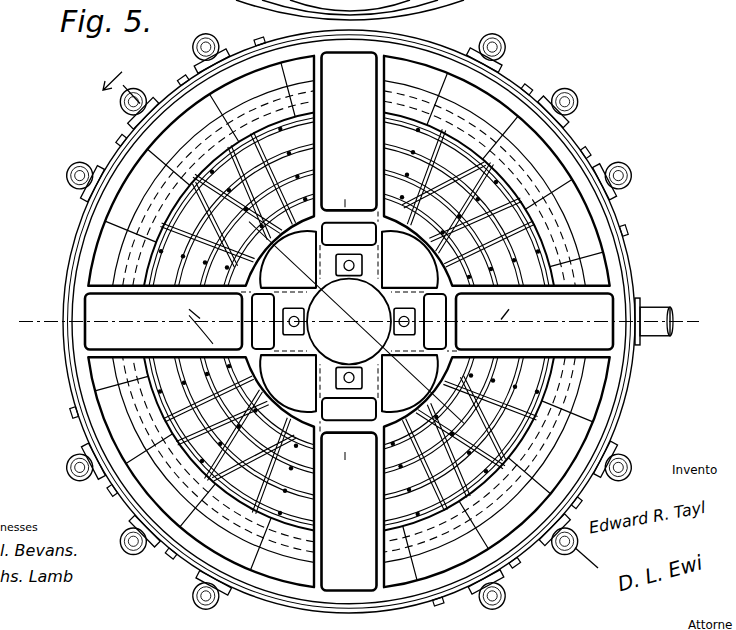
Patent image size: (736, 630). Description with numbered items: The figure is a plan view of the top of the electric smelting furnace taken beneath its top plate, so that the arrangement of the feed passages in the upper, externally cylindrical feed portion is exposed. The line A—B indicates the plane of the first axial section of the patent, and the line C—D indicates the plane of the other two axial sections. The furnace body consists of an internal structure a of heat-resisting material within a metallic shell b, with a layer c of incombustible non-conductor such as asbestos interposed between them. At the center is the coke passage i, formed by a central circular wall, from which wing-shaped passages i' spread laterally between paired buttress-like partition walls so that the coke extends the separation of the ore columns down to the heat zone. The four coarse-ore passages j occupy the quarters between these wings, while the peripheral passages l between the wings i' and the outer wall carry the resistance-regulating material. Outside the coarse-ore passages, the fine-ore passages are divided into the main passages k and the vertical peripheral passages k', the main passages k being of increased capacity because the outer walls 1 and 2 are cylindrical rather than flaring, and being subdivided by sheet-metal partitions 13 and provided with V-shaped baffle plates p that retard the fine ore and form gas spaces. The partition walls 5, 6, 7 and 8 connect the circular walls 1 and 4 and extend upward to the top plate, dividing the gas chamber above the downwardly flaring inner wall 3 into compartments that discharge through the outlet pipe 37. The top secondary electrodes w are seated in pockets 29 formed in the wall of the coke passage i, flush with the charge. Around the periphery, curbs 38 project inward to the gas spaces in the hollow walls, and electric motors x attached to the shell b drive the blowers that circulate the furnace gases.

The outer wall 1 is at (348, 304).
The outer wall 2 is at (349, 296).
The inner wall 3 is at (207, 334).
The circular wall 4 is at (356, 323).
The partition wall 5 is at (197, 311).
The partition wall 6 is at (502, 312).
The partition wall 7 is at (346, 193).
The partition wall 8 is at (346, 465).
The partitions 13 is at (348, 300).
The pockets 29 is at (351, 324).
The outlet pipe 37 is at (654, 315).
The curbs 38 is at (373, 324).
The section line end A is at (355, 324).
The section line end B is at (701, 329).
The section line end C is at (109, 86).
The section line end D is at (586, 566).
The internal structure a is at (335, 321).
The metallic shell b is at (333, 322).
The layer of non-conductor c is at (322, 321).
The coke passage i is at (349, 322).
The wing-shaped passage i' is at (349, 321).
The coarse-ore passage j is at (349, 321).
The main fine-ore passage k is at (332, 321).
The peripheral fine-ore passage k' is at (348, 321).
The peripheral passage l is at (349, 321).
The baffle plates p is at (348, 321).
The secondary electrode w is at (349, 321).
The electric motor x is at (348, 324).